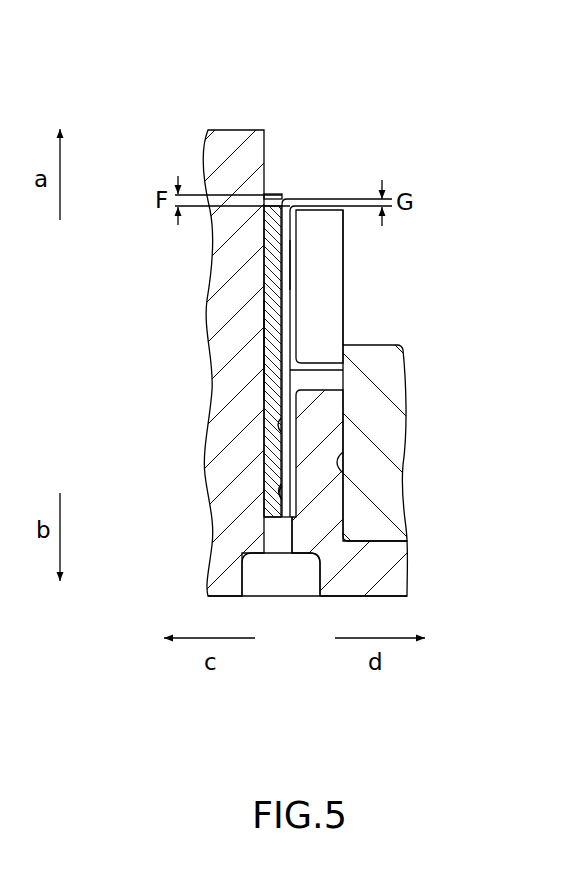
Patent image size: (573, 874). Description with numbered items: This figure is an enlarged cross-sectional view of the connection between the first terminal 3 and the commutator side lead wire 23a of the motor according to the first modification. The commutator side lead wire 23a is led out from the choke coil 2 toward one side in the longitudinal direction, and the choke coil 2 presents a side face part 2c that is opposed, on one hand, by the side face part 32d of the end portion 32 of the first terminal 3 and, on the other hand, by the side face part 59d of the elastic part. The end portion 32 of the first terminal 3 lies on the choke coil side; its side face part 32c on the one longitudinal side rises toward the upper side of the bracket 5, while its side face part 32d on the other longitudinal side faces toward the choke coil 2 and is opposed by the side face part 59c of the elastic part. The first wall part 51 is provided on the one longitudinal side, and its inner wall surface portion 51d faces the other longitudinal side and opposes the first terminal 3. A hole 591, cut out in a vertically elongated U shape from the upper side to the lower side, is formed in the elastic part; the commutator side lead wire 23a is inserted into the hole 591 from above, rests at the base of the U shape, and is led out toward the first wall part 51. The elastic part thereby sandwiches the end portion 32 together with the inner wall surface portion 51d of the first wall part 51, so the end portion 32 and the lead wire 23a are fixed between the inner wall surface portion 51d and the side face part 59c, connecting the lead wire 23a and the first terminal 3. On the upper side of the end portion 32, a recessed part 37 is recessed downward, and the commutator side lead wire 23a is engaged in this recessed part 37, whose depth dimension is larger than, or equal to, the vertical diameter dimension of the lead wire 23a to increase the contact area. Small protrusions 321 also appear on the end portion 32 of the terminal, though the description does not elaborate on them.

The choke coil 2 is at (413, 402).
The side face part of the choke coil 2c is at (345, 452).
The first terminal 3 is at (252, 296).
The bracket 5 is at (188, 320).
The commutator side lead wire 23a is at (298, 233).
The end portion 32 is at (252, 307).
The side face part 32c is at (268, 282).
The side face part 32d is at (290, 258).
The recessed part 37 is at (282, 197).
The first wall part 51 is at (215, 163).
The inner wall surface portion 51d is at (261, 345).
The side face part 59c is at (283, 492).
The side face part 59d is at (345, 408).
The protrusions of plate 321 is at (275, 428).
The hole 591 is at (332, 346).